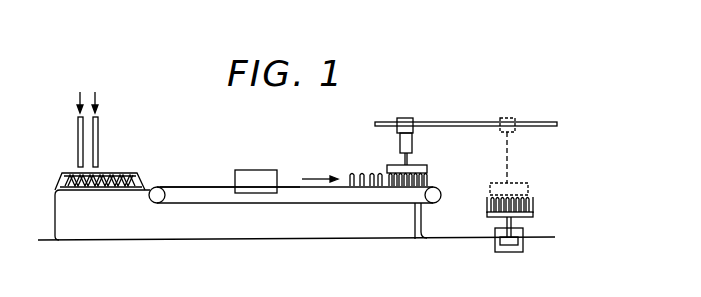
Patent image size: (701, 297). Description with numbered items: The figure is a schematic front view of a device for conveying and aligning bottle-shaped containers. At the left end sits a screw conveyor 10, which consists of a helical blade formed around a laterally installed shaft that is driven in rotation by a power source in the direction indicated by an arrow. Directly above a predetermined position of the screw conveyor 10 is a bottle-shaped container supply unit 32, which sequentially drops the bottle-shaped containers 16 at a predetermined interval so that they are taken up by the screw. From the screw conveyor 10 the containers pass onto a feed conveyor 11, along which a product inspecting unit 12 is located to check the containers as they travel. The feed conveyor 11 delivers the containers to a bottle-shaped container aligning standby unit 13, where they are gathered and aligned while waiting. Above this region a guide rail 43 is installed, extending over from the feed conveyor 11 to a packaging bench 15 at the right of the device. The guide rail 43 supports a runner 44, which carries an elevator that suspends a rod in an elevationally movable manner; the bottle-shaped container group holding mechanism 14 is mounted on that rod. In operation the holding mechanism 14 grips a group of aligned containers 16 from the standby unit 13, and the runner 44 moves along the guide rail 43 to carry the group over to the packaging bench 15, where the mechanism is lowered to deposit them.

The screw conveyor 10 is at (122, 174).
The feed conveyor 11 is at (202, 187).
The product inspecting unit 12 is at (255, 150).
The bottle-shaped container aligning standby unit 13 is at (407, 193).
The bottle-shaped container group holding mechanism 14 is at (388, 163).
The packaging bench 15 is at (536, 212).
The bottle-shaped container 16 is at (352, 174).
The bottle-shaped container supply unit 32 is at (78, 140).
The guide rail 43 is at (455, 121).
The runner 44 is at (404, 118).